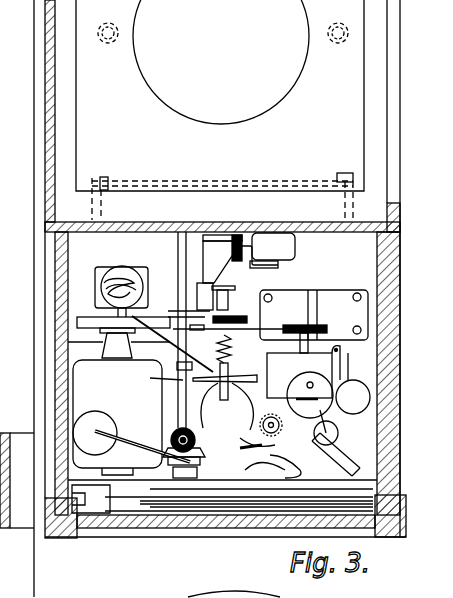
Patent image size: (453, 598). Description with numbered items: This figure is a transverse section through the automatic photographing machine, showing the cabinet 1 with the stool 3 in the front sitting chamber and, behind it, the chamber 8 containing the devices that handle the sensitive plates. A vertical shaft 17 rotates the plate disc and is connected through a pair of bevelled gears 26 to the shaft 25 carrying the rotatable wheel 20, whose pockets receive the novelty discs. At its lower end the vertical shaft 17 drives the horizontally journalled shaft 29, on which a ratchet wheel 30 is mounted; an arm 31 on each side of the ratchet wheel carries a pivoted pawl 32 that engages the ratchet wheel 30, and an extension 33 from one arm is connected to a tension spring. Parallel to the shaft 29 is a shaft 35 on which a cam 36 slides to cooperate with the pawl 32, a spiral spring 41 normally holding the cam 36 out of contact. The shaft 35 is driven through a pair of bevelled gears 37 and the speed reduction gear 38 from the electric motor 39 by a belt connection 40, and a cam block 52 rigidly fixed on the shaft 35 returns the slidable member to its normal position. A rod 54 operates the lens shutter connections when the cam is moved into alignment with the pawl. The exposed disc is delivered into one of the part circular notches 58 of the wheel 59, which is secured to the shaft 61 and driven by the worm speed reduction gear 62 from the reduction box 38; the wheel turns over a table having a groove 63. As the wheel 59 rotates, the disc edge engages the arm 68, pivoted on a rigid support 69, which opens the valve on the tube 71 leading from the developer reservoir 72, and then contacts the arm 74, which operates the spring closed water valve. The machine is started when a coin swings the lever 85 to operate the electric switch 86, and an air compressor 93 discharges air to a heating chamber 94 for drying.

The cabinet 1 is at (62, 540).
The stool 3 is at (220, 110).
The chamber 8 is at (90, 510).
The vertical shaft 17 is at (173, 430).
The rotatable wheel 20 is at (138, 512).
The shaft 25 is at (185, 488).
The bevelled gears 26 is at (171, 442).
The horizontally journalled shaft 29 is at (155, 379).
The ratchet wheel 30 is at (150, 330).
The arm 31 is at (192, 304).
The pawl 32 is at (197, 336).
The extension 33 is at (192, 308).
The shaft 35 is at (225, 280).
The cam 36 is at (235, 316).
The bevelled gears 37 is at (225, 396).
The speed reduction gear 38 is at (320, 353).
The electric motor 39 is at (117, 417).
The belt connection 40 is at (277, 328).
The spiral spring 41 is at (250, 343).
The cam block 52 is at (242, 290).
The rod 54 is at (178, 392).
The part circular notches 58 is at (252, 445).
The wheel 59 is at (265, 463).
The shaft 61 is at (262, 430).
The worm wheel and worm speed reduction gear 62 is at (285, 463).
The groove 63 is at (254, 429).
The arm 68 is at (17, 433).
The rigid support 69 is at (353, 470).
The tube 71 is at (340, 432).
The reservoir 72 is at (353, 383).
The arm 74 is at (207, 493).
The lever 85 is at (258, 266).
The electric switch 86 is at (296, 248).
The air compressor 93 is at (132, 272).
The heating chamber 94 is at (300, 382).